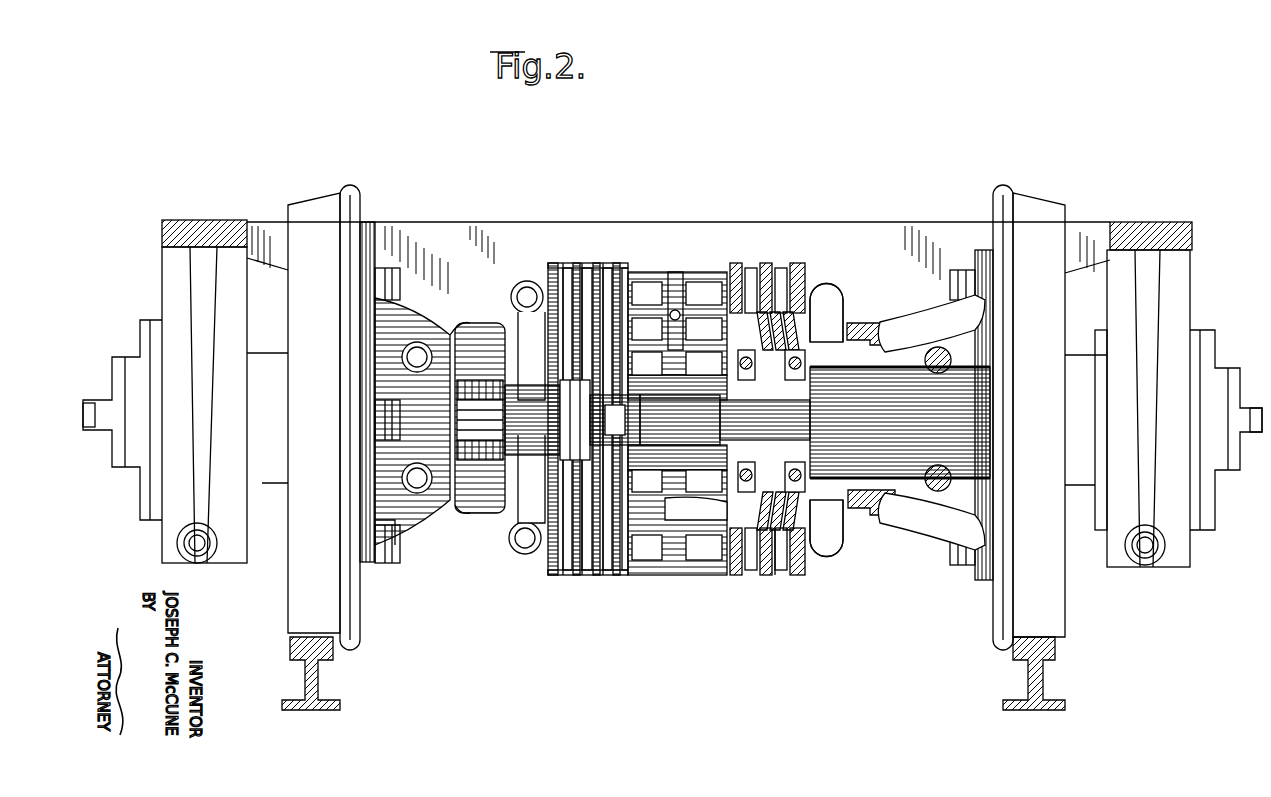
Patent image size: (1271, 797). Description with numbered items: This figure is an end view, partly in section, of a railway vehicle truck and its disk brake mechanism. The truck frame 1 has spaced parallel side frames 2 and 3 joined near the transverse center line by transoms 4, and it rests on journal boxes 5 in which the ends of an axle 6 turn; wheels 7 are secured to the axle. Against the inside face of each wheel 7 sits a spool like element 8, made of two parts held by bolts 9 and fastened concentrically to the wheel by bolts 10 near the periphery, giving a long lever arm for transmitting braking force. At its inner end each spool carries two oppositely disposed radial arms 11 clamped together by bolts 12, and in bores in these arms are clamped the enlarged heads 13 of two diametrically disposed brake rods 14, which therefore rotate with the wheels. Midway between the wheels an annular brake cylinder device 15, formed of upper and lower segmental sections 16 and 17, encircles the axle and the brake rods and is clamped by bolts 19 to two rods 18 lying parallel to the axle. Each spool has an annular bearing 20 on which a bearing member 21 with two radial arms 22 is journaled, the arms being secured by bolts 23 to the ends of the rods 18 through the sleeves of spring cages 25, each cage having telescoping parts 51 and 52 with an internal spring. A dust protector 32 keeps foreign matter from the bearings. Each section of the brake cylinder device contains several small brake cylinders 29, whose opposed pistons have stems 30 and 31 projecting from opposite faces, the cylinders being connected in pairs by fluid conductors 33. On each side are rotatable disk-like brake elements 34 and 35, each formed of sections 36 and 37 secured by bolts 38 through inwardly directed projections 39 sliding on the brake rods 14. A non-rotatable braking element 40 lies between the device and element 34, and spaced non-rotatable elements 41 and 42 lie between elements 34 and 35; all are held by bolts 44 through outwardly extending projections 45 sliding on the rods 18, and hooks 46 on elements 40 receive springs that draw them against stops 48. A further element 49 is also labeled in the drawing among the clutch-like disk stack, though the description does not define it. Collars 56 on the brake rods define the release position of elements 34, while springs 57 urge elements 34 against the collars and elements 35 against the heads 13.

The truck frame 1 is at (212, 221).
The side frame 2 is at (162, 225).
The side frame 3 is at (1192, 240).
The transom 4 is at (655, 222).
The journal box 5 is at (140, 470).
The axle 6 is at (965, 388).
The wheel 7 is at (350, 624).
The spool like element 8 is at (400, 510).
The bolt 9 is at (412, 350).
The bolt 10 is at (400, 470).
The radial arm 11 is at (520, 310).
The bolt 12 is at (527, 282).
The enlarged head 13 is at (530, 340).
The brake rod 14 is at (870, 348).
The brake cylinder device 15 is at (695, 375).
The upper segmental section 16 is at (665, 275).
The lower segmental section 17 is at (672, 578).
The rod 18 is at (725, 418).
The bolt 19 is at (680, 320).
The annular bearing 20 is at (880, 330).
The bearing member 21 is at (460, 515).
The radial arm 22 is at (457, 412).
The bolt 23 is at (485, 385).
The spring cage 25 is at (485, 450).
The brake cylinder 29 is at (647, 421).
The piston stem 30 is at (630, 310).
The piston stem 31 is at (704, 438).
The dust protector 32 is at (890, 372).
The fluid conductor 33 is at (704, 293).
The rotatable brake element 34 is at (738, 290).
The rotatable brake element 35 is at (805, 300).
The complementary section 36 is at (812, 245).
The complementary section 37 is at (553, 290).
The bolt 38 is at (746, 372).
The inwardly directed projection 39 is at (770, 352).
The non-rotatable braking element 40 is at (608, 285).
The non-rotatable brake element 41 is at (578, 285).
The non-rotatable brake element 42 is at (598, 290).
The bolt 44 is at (532, 418).
The outwardly extending projection 45 is at (560, 420).
The hook 46 is at (630, 425).
The stop 48 is at (679, 418).
The clutch plate 49 is at (575, 578).
The telescoping part 51 is at (500, 360).
The telescoping part 52 is at (540, 345).
The collar 56 is at (750, 285).
The spring 57 is at (760, 300).